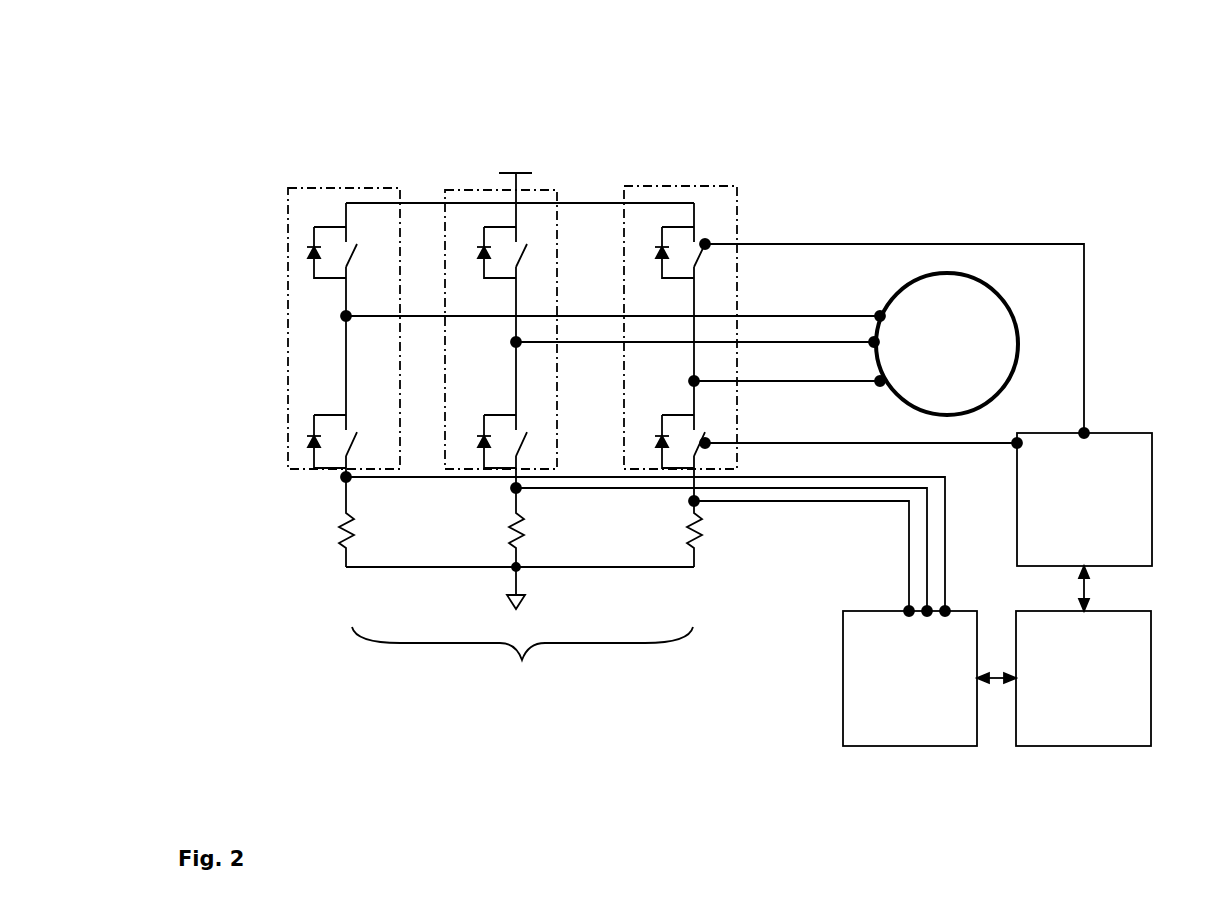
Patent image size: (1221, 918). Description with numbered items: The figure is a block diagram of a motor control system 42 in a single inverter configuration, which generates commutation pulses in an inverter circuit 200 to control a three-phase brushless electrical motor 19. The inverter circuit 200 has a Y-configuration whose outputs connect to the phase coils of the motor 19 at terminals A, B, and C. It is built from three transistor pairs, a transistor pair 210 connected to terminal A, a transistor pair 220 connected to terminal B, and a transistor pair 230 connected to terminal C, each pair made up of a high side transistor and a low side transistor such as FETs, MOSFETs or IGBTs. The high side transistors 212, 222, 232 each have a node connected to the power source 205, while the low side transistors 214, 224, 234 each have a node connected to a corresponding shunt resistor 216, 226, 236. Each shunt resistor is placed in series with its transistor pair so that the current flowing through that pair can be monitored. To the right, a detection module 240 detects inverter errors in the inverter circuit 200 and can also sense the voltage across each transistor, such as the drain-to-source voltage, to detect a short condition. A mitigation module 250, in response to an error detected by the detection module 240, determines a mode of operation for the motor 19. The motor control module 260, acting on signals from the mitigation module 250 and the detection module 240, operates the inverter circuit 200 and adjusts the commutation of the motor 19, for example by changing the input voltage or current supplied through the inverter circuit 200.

The motor control system 42 is at (380, 90).
The power source 205 is at (612, 160).
The inverter circuit 200 is at (615, 700).
The transistor pair 210 is at (287, 469).
The transistor pair 220 is at (453, 433).
The transistor pair 230 is at (623, 421).
The high side transistor 212 is at (343, 221).
The low side transistor 214 is at (343, 411).
The shunt resistor 216 is at (343, 548).
The high side transistor 222 is at (510, 221).
The low side transistor 224 is at (510, 410).
The shunt resistor 226 is at (510, 546).
The high side transistor 232 is at (691, 225).
The low side transistor 234 is at (691, 413).
The shunt resistor 236 is at (691, 546).
The three-phase brushless electrical motor 19 is at (936, 390).
The detection module 240 is at (942, 738).
The mitigation module 250 is at (1118, 738).
The motor control module 260 is at (1118, 558).